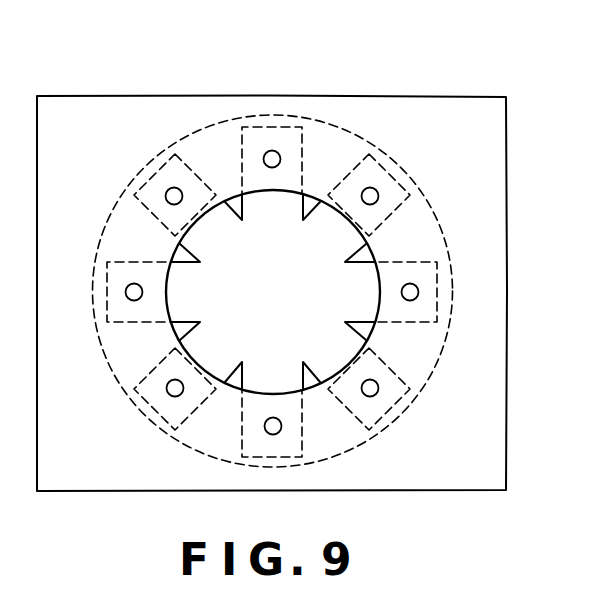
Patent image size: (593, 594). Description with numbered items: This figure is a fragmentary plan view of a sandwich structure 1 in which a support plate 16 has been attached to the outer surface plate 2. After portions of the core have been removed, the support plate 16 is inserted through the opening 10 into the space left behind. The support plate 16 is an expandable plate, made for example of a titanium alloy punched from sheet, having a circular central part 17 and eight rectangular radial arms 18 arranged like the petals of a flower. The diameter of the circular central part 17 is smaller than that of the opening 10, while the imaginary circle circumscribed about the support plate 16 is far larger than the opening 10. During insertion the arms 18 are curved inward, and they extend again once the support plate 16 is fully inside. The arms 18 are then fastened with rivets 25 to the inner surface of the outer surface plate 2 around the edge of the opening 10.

The sandwich structure 1 is at (66, 75).
The outer surface plate 2 is at (494, 188).
The opening 10 is at (365, 341).
The support plate 16 is at (379, 150).
The circular central part 17 is at (294, 307).
The radial arms 18 is at (118, 265).
The rivets 25 is at (410, 290).